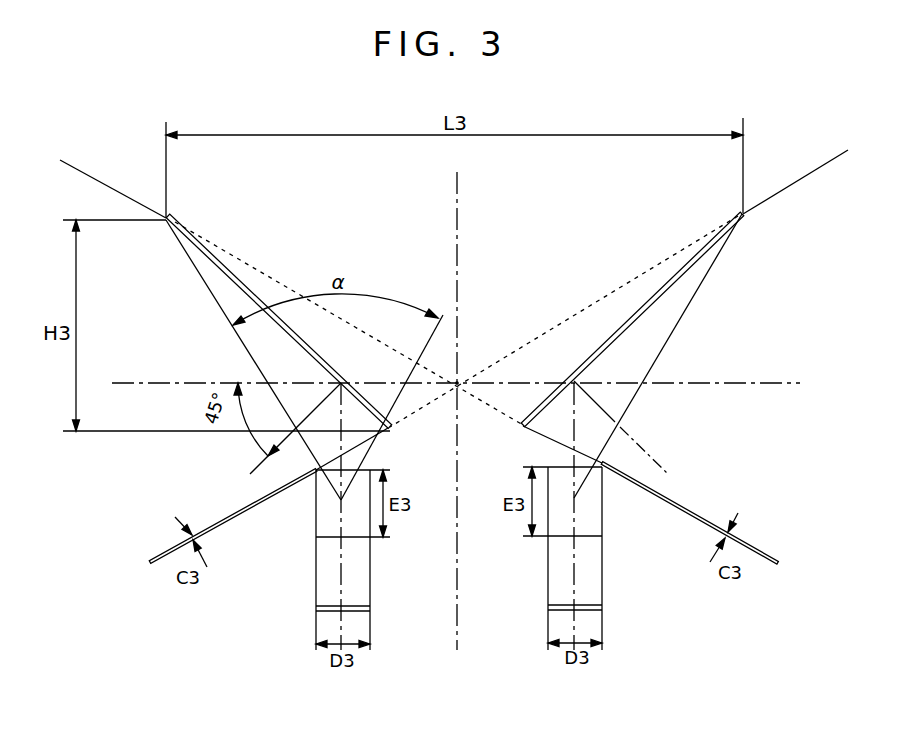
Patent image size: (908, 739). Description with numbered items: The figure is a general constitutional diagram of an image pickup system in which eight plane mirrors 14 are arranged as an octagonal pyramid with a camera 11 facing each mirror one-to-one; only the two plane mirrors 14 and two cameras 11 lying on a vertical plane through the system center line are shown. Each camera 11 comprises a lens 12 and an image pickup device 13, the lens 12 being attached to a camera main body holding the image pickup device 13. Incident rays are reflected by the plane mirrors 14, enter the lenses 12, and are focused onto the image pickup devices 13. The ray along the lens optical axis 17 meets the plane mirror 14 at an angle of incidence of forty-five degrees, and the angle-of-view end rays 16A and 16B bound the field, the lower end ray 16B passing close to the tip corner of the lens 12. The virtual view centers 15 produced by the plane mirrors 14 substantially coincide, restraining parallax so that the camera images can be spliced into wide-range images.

The camera 11 is at (458, 558).
The lens 12 is at (338, 539).
The image pickup device 13 is at (458, 595).
The plane mirror 14 is at (220, 252).
The virtual view center 15 is at (458, 381).
The angle-of-view end ray 16A is at (90, 173).
The angle-of-view end ray 16B is at (163, 549).
The lens optical axis 17 is at (578, 420).